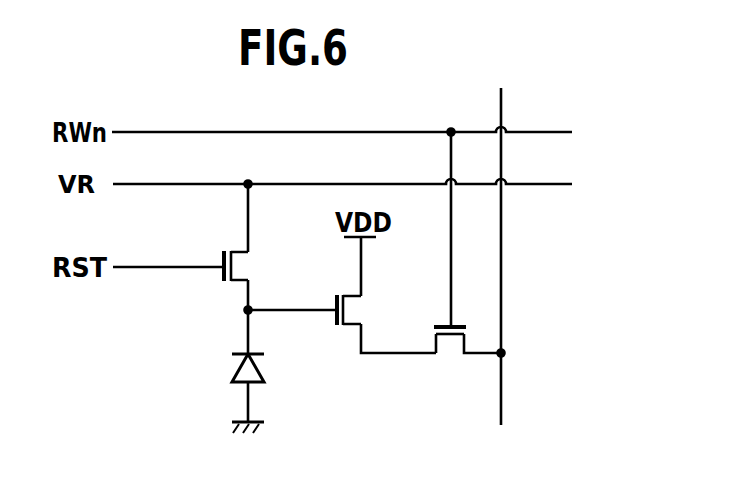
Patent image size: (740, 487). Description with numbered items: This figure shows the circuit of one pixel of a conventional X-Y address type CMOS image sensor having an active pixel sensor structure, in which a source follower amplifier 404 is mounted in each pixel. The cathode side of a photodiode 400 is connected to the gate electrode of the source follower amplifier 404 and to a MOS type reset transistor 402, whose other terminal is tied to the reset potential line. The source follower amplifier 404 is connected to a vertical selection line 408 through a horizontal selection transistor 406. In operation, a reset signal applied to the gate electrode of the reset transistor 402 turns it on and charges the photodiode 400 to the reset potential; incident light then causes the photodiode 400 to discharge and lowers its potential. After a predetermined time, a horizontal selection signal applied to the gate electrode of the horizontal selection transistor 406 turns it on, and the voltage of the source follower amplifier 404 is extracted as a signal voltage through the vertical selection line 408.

The photodiode 400 is at (232, 368).
The reset transistor 402 is at (238, 268).
The source follower amplifier 404 is at (356, 309).
The horizontal selection transistor 406 is at (449, 345).
The vertical selection line 408 is at (503, 266).